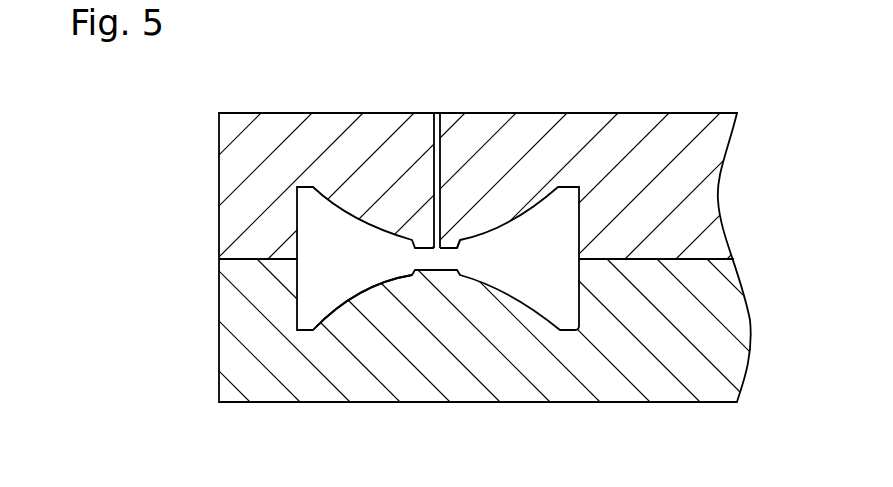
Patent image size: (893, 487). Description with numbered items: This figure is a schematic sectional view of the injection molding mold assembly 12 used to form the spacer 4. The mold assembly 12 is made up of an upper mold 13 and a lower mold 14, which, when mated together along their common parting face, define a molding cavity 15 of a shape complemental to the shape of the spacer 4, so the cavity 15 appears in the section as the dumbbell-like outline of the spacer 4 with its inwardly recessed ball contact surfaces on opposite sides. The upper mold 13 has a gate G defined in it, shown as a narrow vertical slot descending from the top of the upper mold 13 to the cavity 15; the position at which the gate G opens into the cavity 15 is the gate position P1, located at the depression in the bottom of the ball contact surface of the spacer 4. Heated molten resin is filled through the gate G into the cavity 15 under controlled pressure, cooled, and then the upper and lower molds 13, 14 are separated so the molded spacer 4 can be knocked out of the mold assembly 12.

The spacer 4 is at (537, 272).
The injection molding mold assembly 12 is at (78, 188).
The upper mold 13 is at (247, 205).
The lower mold 14 is at (240, 317).
The molding cavity 15 is at (335, 277).
The gate G is at (438, 160).
The gate position P1 is at (465, 240).